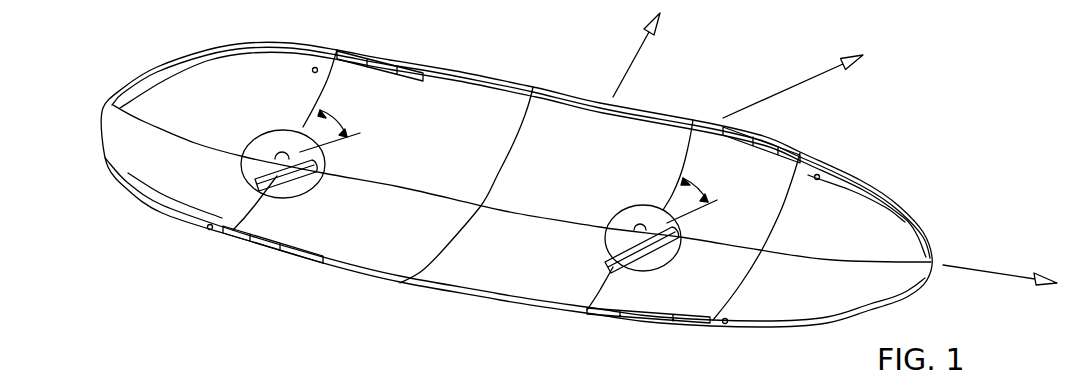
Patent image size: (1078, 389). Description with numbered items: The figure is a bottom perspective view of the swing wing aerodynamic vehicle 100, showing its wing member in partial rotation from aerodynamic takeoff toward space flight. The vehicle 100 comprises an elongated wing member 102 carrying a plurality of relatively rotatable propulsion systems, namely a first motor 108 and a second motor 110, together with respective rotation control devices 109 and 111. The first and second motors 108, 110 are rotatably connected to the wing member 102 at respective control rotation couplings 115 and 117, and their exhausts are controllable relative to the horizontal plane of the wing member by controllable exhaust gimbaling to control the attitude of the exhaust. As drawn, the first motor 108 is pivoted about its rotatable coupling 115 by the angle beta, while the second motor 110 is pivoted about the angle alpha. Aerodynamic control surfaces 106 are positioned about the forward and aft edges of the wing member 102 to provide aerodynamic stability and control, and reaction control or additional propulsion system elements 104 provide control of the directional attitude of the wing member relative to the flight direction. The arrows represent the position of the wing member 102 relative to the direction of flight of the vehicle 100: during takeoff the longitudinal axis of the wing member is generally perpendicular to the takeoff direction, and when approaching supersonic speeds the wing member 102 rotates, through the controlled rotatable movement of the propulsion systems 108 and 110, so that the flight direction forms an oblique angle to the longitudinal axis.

The swing wing aerodynamic vehicle 100 is at (589, 187).
The wing member 102 is at (545, 113).
The additional propulsion system elements 104 is at (315, 66).
The aerodynamic control surfaces 106 is at (387, 62).
The first motor 108 is at (647, 250).
The rotation control device 109 is at (620, 223).
The second motor 110 is at (303, 182).
The rotation control device 111 is at (257, 150).
The control rotation coupling 115 is at (640, 226).
The control rotation coupling 117 is at (282, 156).